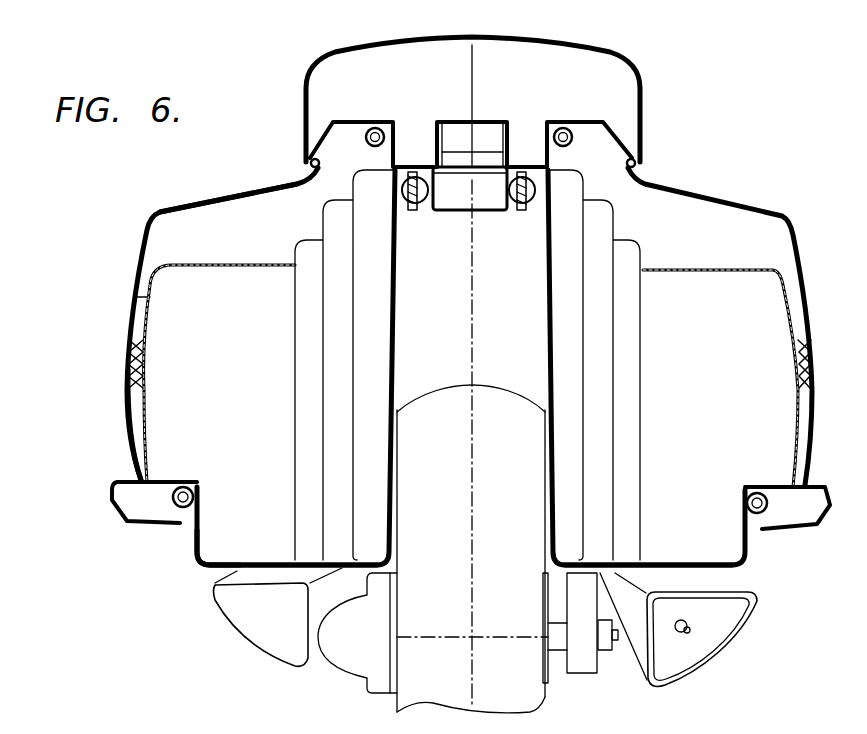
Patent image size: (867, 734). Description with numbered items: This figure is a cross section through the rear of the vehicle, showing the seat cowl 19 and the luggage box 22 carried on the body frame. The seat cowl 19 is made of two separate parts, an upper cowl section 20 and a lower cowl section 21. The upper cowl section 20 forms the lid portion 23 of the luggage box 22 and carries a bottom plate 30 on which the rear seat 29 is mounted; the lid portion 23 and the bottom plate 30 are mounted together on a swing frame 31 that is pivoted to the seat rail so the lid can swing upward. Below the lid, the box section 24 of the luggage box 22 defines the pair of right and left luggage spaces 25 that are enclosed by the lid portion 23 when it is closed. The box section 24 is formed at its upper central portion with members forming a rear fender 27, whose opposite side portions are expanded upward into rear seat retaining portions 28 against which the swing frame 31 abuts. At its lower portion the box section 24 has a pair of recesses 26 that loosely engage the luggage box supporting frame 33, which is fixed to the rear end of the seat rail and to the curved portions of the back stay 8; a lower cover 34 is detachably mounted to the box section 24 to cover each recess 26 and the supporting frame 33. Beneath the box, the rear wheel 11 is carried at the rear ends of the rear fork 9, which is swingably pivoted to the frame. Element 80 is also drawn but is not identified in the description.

The back stay 8 is at (422, 211).
The rear fork 9 is at (341, 664).
The rear wheel 11 is at (493, 406).
The seat cowl 19 is at (104, 365).
The upper cowl section 20 is at (135, 239).
The lower cowl section 21 is at (127, 412).
The luggage box 22 is at (135, 298).
The lid portion 23 is at (222, 200).
The box section 24 is at (148, 418).
The luggage spaces 25 is at (254, 540).
The recesses 26 is at (197, 560).
The rear fender 27 is at (397, 299).
The rear seat retaining portions 28 is at (392, 177).
The rear seat 29 is at (575, 48).
The bottom plate 30 is at (358, 117).
The swing frame 31 is at (364, 142).
The luggage box supporting frame 33 is at (173, 504).
The lower cover 34 is at (128, 456).
The support bracket 80 is at (254, 630).